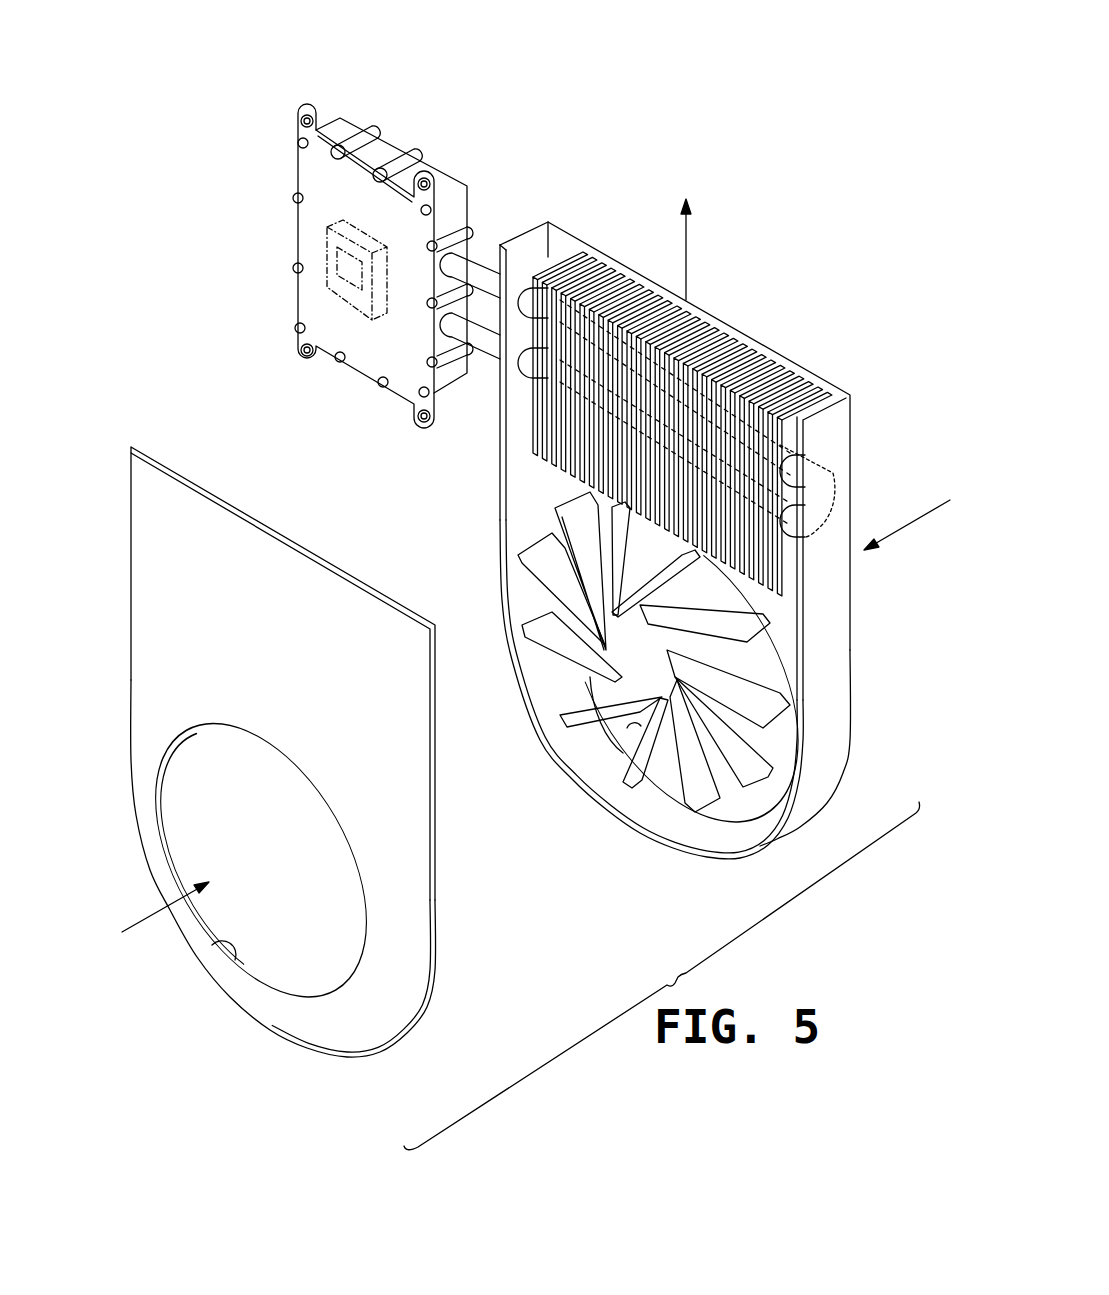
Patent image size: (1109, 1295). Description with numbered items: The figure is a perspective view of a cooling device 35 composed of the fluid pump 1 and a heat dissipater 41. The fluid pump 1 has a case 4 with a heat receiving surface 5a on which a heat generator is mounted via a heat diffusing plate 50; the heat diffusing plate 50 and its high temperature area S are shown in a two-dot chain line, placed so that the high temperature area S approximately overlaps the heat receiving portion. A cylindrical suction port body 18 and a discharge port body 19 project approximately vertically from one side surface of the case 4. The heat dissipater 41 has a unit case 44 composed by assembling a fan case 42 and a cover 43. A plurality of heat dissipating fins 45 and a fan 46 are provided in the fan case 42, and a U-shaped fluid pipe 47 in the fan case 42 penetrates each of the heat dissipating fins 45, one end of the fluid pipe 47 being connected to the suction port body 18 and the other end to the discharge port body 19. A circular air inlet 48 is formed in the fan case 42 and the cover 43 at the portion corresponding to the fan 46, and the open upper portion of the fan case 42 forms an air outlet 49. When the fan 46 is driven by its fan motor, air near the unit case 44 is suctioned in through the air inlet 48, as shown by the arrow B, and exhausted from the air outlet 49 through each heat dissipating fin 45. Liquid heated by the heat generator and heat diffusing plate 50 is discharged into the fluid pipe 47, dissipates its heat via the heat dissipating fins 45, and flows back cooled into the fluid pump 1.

The fluid pump 1 is at (430, 131).
The case 4 is at (335, 132).
The heat receiving surface 5a is at (298, 176).
The heat diffusing plate 50 is at (330, 242).
The high temperature area S is at (330, 285).
The suction port body 18 is at (482, 253).
The discharge port body 19 is at (485, 352).
The cooling device 35 is at (617, 160).
The heat dissipater 41 is at (889, 374).
The fan case 42 is at (833, 680).
The cover 43 is at (338, 1033).
The unit case 44 is at (216, 422).
The heat dissipating fins 45 is at (700, 322).
The fan 46 is at (752, 760).
The fluid pipe 47 is at (845, 473).
The air inlet 48 is at (605, 720).
The air outlet 49 is at (820, 400).
The arrow B is at (686, 238).